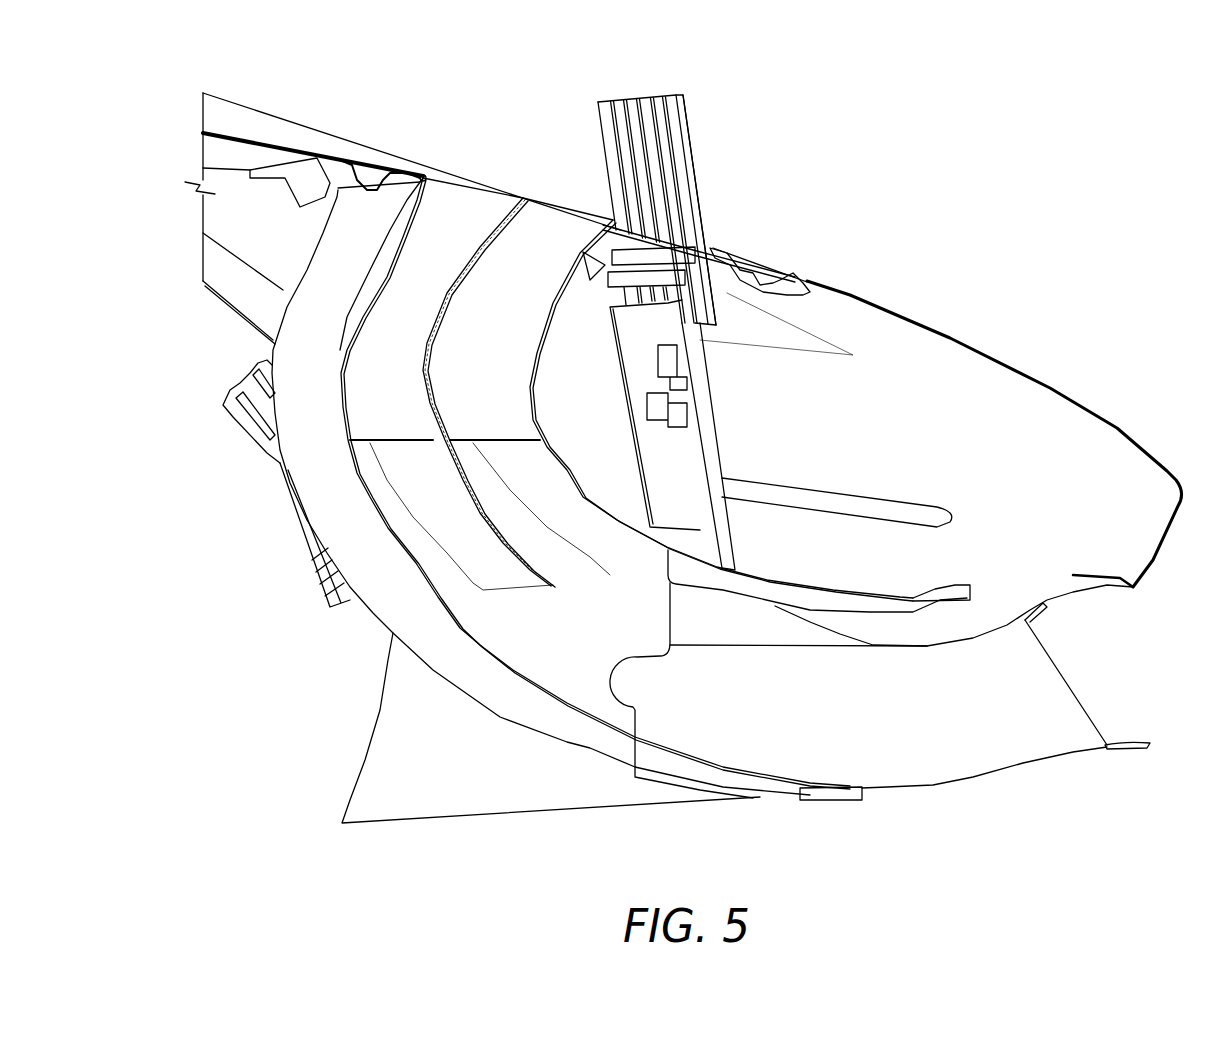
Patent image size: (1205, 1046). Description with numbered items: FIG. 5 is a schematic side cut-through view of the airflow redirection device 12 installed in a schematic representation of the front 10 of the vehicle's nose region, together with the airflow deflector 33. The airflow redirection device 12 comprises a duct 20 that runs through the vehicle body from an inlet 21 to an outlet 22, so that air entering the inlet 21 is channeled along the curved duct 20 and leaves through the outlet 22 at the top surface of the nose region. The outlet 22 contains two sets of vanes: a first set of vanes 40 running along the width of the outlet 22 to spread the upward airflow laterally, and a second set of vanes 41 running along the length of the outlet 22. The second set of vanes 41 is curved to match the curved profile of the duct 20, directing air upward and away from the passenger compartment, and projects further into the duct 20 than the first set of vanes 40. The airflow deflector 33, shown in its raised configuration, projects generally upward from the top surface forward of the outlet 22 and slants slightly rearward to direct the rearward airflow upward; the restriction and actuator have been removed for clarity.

The front of the nose region 10 is at (945, 310).
The airflow redirection device 12 is at (686, 814).
The duct 20 is at (550, 653).
The inlet 21 is at (1050, 693).
The outlet 22 is at (447, 180).
The airflow deflector 33 is at (637, 113).
The first set of vanes 40 is at (523, 195).
The second set of vanes 41 is at (556, 222).